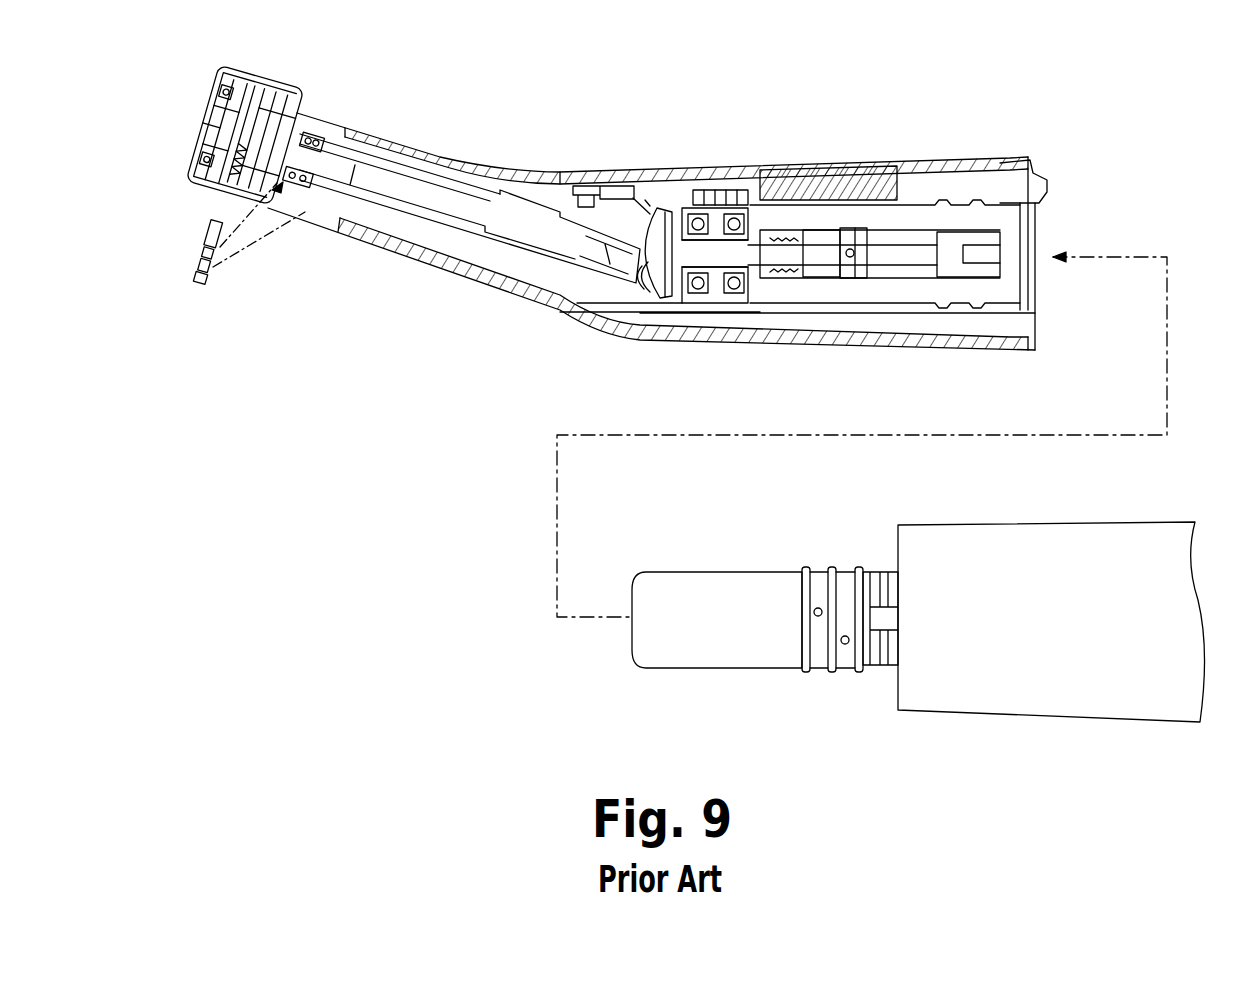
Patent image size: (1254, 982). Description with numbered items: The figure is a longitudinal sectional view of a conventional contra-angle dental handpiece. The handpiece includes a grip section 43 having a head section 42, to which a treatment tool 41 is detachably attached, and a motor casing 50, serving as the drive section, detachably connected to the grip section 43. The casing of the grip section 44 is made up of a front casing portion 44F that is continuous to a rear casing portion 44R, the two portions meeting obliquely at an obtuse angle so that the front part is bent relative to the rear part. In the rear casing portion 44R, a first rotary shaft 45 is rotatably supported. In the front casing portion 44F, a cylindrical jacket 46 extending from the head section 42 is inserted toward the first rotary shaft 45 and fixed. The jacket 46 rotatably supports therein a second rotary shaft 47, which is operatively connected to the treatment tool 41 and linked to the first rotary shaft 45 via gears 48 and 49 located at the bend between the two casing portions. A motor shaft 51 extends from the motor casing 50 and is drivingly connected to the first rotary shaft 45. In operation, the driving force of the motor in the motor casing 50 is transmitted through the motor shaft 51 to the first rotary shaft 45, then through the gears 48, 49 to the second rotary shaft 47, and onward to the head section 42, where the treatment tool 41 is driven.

The treatment tool 41 is at (218, 280).
The head section 42 is at (196, 109).
The grip section 43 is at (697, 164).
The casing of the grip section 44 is at (578, 168).
The front casing portion 44F is at (462, 150).
The rear casing portion 44R is at (780, 170).
The first rotary shaft 45 is at (820, 248).
The cylindrical jacket 46 is at (386, 160).
The second rotary shaft 47 is at (496, 225).
The gear 48 is at (657, 218).
The gear 49 is at (645, 262).
The motor casing 50 is at (1048, 540).
The motor shaft 51 is at (693, 590).